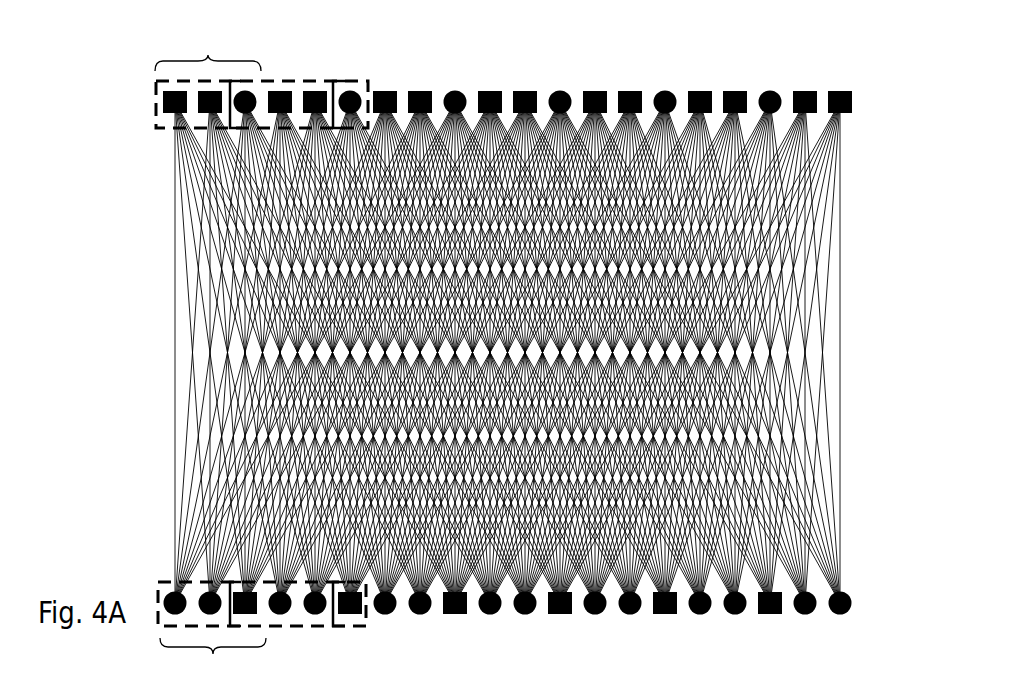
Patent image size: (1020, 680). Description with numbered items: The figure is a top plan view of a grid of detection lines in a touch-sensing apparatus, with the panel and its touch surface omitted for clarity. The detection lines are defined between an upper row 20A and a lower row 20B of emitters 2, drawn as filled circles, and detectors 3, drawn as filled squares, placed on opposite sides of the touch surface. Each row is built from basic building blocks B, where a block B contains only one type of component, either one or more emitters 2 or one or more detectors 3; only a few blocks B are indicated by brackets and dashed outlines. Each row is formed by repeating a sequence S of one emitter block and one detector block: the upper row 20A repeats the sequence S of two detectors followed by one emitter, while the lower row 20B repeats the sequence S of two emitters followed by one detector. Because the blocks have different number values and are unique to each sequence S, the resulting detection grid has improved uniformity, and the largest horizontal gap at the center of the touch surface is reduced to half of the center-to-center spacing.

The emitter 2 is at (650, 83).
The detector 3 is at (787, 83).
The upper row 20A is at (128, 105).
The lower row 20B is at (126, 596).
The building block B is at (150, 82).
The sequence S is at (210, 354).